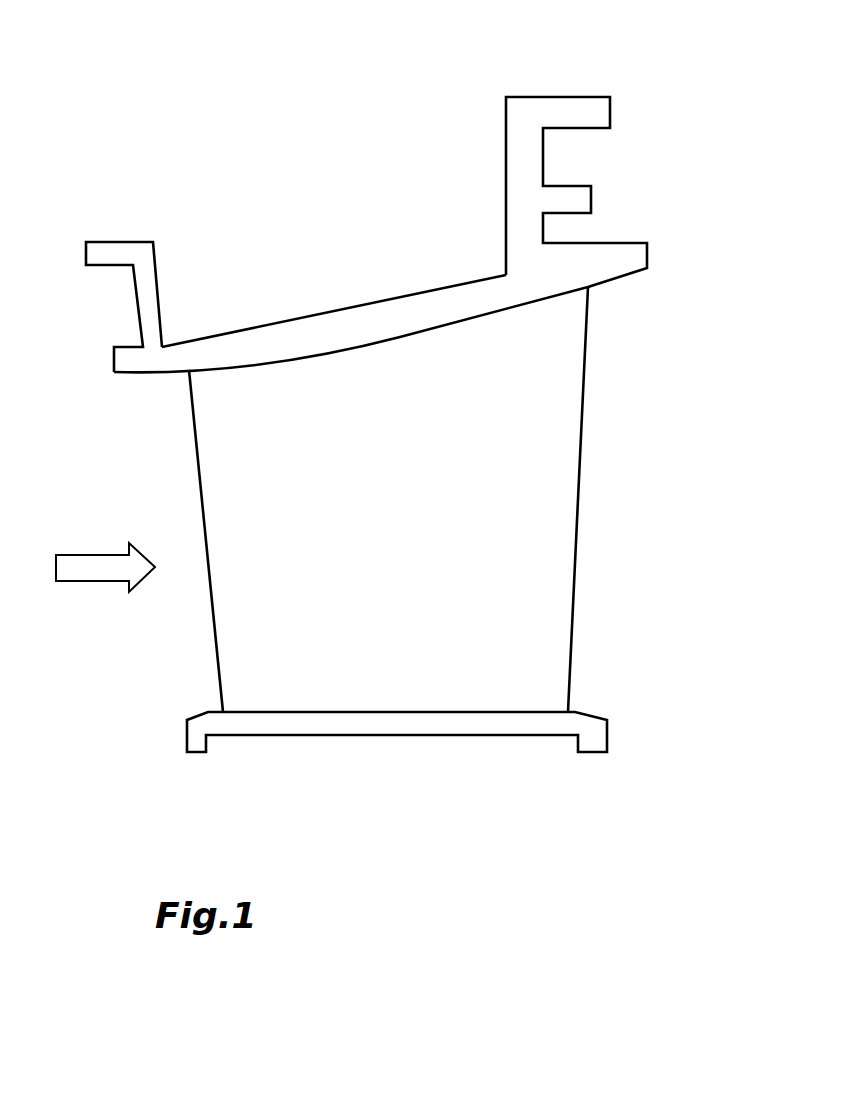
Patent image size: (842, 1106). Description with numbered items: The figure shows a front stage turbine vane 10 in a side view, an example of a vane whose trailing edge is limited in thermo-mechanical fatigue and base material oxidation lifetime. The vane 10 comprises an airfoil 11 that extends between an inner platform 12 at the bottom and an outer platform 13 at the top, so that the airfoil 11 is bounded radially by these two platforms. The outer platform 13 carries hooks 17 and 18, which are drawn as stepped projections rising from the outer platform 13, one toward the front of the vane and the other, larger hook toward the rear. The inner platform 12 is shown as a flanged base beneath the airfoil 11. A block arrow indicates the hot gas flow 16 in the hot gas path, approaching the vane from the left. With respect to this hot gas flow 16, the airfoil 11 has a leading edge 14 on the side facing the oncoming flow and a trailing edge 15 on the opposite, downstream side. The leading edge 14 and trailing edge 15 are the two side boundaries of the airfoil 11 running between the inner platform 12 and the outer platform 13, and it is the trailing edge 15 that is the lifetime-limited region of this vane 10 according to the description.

The vane 10 is at (368, 226).
The airfoil 11 is at (402, 499).
The inner platform 12 is at (370, 722).
The outer platform 13 is at (301, 326).
The leading edge 14 is at (203, 643).
The trailing edge 15 is at (585, 586).
The hot gas flow 16 is at (95, 564).
The hook 17 is at (117, 247).
The hook 18 is at (557, 110).